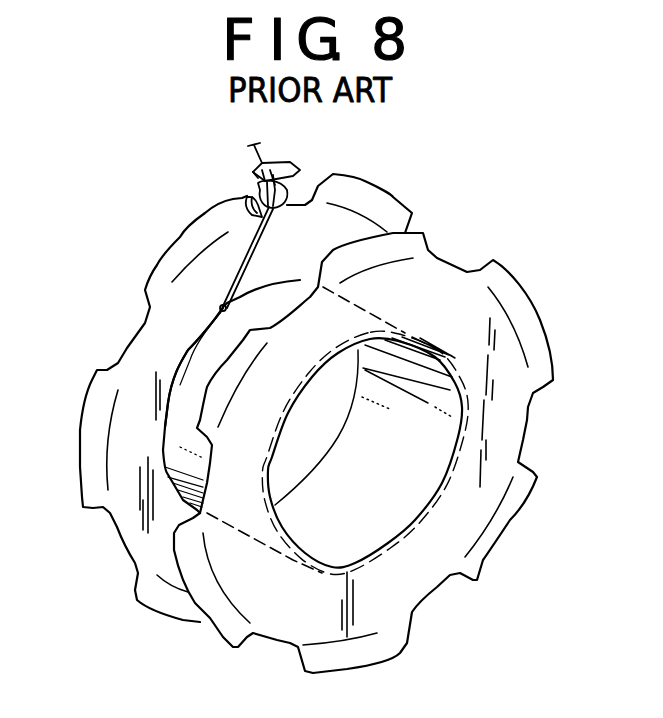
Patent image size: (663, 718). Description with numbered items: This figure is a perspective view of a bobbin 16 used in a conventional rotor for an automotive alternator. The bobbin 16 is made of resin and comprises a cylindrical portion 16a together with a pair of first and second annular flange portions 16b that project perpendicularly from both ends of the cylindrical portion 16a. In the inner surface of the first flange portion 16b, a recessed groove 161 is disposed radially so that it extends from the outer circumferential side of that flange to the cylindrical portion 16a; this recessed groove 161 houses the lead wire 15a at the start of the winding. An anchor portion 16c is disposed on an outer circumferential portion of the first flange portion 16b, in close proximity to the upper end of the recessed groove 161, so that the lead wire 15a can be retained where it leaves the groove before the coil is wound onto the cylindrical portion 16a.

The bobbin 16 is at (531, 274).
The cylindrical portion 16a is at (178, 433).
The first and second annular flange portions 16b is at (153, 350).
The anchor portion 16c is at (303, 163).
The lead wire 15a is at (243, 218).
The recessed groove 161 is at (220, 286).